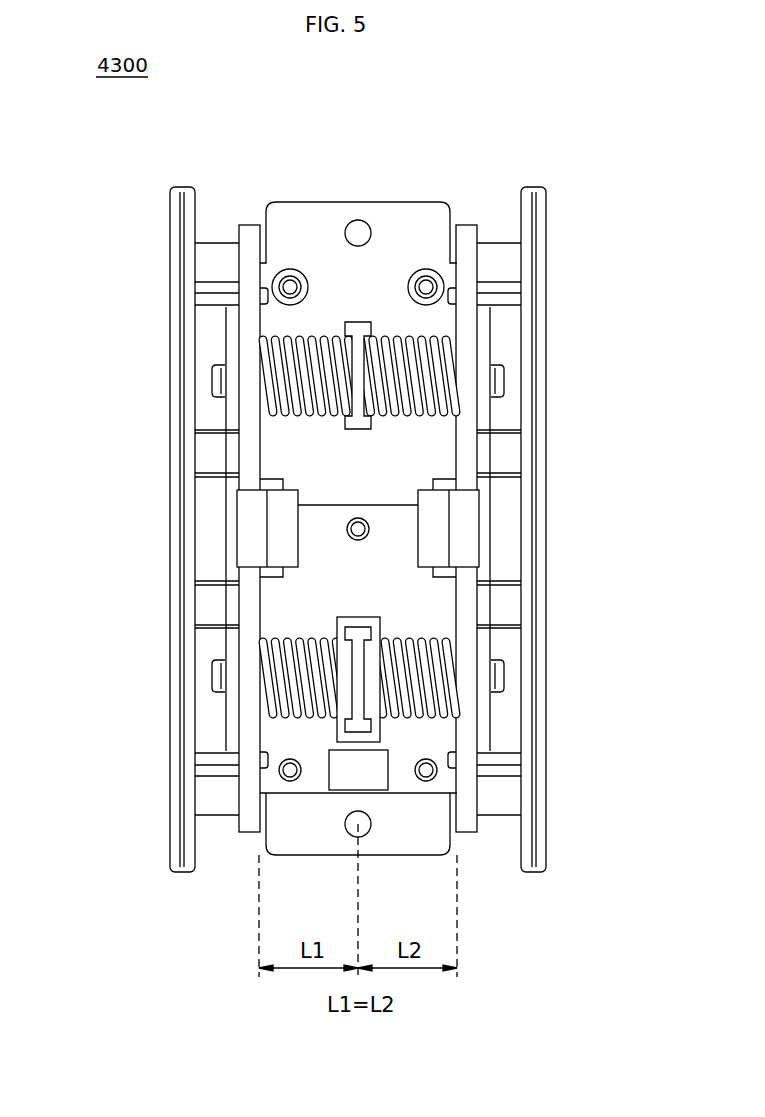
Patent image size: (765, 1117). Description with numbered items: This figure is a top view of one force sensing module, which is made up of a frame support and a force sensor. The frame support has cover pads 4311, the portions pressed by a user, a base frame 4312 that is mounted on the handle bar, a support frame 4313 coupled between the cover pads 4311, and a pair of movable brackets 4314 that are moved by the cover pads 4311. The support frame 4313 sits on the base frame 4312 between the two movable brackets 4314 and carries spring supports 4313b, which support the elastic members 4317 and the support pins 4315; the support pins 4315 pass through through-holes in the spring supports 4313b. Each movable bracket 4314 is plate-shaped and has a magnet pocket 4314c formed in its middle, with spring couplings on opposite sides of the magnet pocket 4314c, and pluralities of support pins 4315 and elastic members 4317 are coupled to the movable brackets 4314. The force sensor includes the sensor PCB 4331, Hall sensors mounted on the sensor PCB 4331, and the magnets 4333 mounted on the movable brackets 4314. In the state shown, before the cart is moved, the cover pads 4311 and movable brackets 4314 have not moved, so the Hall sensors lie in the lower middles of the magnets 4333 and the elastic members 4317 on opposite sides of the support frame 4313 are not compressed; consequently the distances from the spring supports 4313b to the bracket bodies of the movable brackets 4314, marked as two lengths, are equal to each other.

The cover pads 4311 is at (170, 270).
The base frame 4312 is at (392, 230).
The support frame 4313 is at (333, 290).
The spring supports 4313b is at (363, 333).
The movable brackets 4314 is at (252, 236).
The magnet pocket 4314c is at (276, 486).
The support pins 4315 is at (499, 375).
The elastic members 4317 is at (432, 397).
The sensor PCB 4331 is at (285, 598).
The magnets 4333 is at (250, 527).